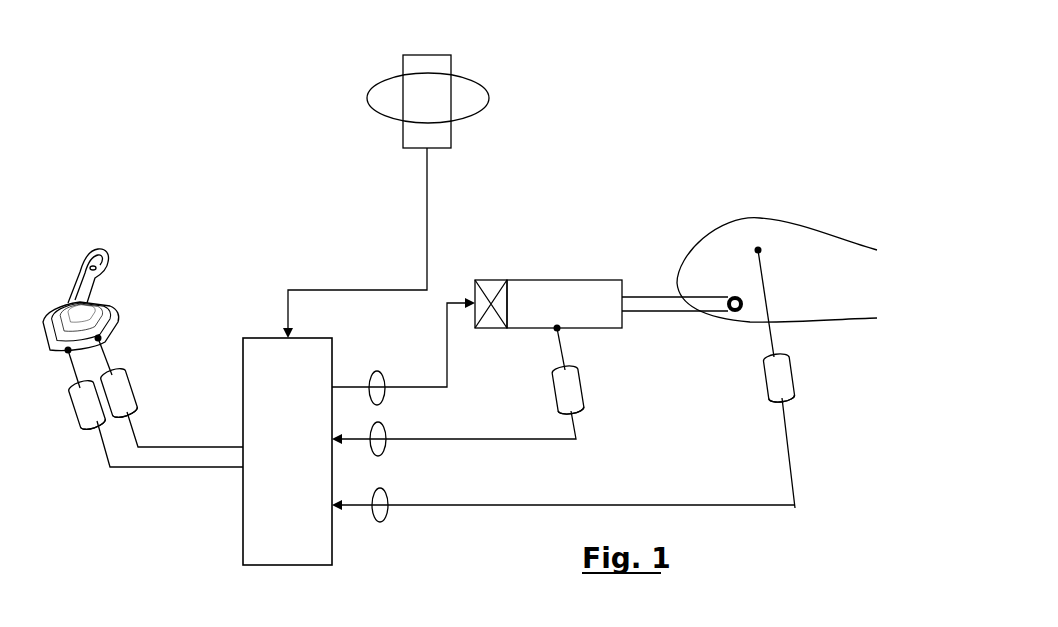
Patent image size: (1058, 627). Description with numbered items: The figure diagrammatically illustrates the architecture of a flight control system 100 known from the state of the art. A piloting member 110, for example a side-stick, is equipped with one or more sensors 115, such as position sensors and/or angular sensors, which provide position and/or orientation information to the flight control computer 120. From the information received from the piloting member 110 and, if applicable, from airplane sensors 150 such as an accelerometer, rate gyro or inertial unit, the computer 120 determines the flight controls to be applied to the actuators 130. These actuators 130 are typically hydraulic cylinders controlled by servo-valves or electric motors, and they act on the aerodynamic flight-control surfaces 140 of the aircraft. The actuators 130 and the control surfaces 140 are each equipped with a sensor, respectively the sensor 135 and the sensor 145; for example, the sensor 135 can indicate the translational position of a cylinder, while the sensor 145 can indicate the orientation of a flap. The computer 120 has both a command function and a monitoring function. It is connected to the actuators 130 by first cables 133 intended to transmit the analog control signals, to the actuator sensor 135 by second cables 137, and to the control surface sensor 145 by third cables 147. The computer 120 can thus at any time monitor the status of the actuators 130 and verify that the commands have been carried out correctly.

The flight control system 100 is at (279, 261).
The piloting member 110 is at (103, 256).
The sensors 115 is at (130, 388).
The flight control computer 120 is at (287, 451).
The actuators 130 is at (548, 277).
The first cables 133 is at (377, 404).
The sensor 135 is at (578, 392).
The second cables 137 is at (378, 456).
The aerodynamic flight-control surfaces 140 is at (743, 218).
The sensor 145 is at (792, 382).
The third cables 147 is at (380, 522).
The airplane sensors 150 is at (447, 65).